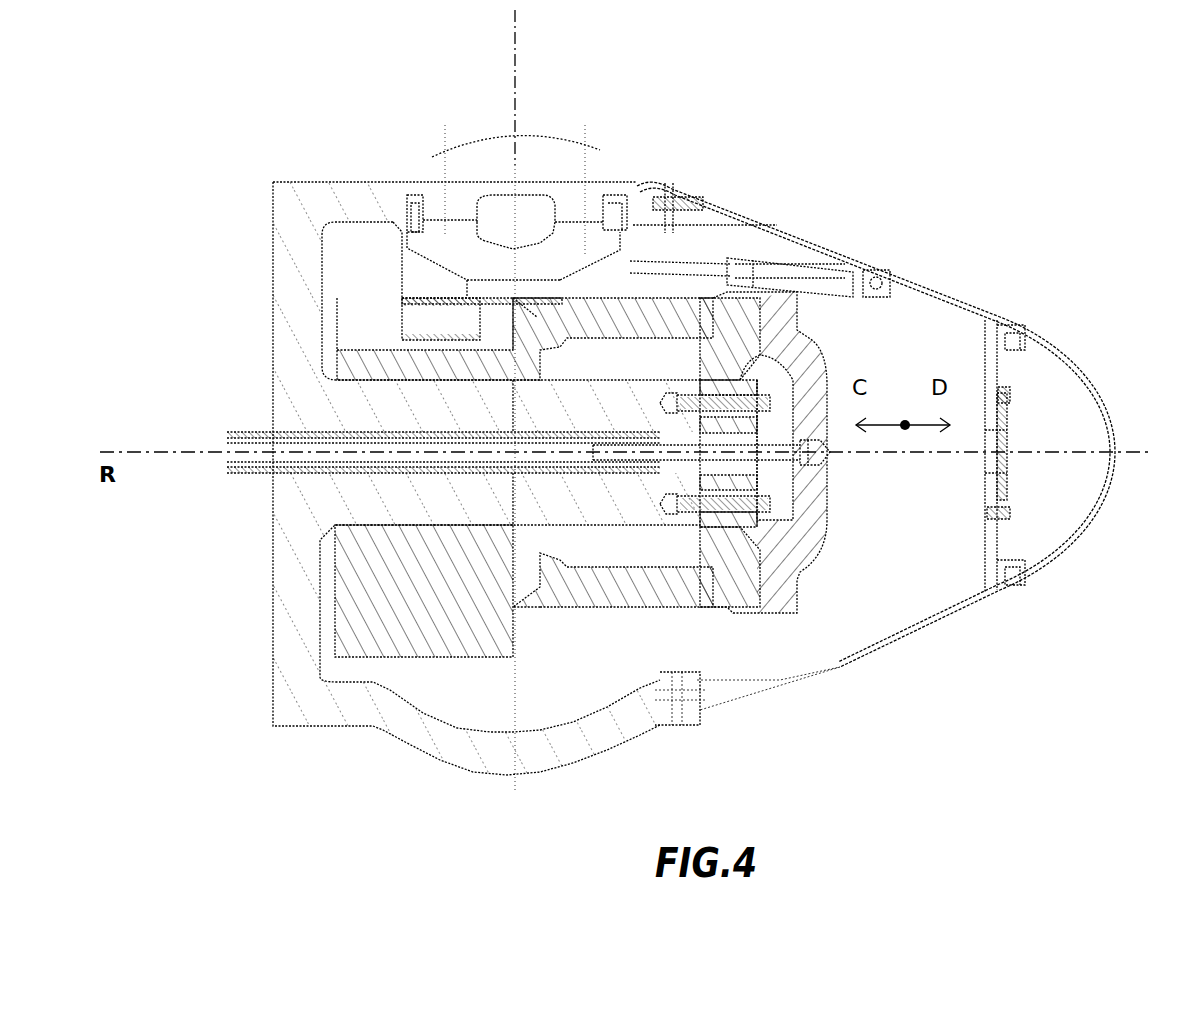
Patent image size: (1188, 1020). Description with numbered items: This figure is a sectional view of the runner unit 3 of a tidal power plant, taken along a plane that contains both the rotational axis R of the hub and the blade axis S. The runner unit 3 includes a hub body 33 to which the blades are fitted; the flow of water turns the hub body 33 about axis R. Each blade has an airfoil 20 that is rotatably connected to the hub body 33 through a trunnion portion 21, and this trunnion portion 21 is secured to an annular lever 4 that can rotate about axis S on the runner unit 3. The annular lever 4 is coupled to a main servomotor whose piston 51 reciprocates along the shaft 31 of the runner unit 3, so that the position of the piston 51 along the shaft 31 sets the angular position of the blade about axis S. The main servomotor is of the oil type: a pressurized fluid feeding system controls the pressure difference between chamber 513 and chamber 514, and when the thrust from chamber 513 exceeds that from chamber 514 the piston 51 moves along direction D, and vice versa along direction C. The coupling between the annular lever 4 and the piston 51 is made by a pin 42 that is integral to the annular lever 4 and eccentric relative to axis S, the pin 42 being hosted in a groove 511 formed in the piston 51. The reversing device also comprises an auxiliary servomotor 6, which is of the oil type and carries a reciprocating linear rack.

The runner unit 3 is at (219, 199).
The hub body 33 is at (300, 210).
The airfoil 20 is at (513, 101).
The trunnion portion 21 is at (555, 160).
The annular lever 4 is at (575, 251).
The auxiliary servomotor 6 is at (822, 248).
The piston 51 is at (785, 352).
The groove 511 is at (398, 307).
The chamber 513 is at (777, 492).
The chamber 514 is at (627, 360).
The pin 42 is at (436, 310).
The shaft 31 is at (487, 452).